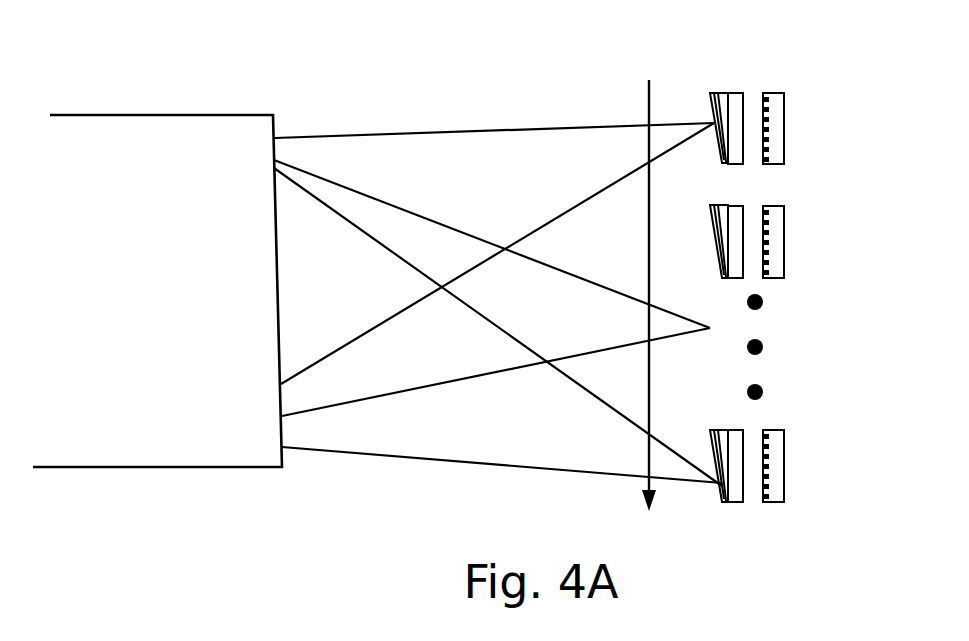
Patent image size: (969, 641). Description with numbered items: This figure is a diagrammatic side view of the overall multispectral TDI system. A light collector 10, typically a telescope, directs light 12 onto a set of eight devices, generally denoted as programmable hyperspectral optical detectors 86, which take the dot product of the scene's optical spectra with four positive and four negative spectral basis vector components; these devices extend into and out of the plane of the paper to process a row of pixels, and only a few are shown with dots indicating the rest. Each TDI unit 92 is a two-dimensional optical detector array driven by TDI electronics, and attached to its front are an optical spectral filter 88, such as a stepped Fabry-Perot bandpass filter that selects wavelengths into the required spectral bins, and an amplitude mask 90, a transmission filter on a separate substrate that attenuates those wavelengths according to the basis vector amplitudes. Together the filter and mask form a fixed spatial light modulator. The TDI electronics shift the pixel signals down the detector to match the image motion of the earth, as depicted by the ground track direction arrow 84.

The light collector 10 is at (157, 291).
The light 12 is at (432, 121).
The ground track direction arrow 84 is at (640, 90).
The programmable hyperspectral optical detectors 86 is at (800, 437).
The optical spectral filter 88 is at (715, 92).
The amplitude mask 90 is at (746, 90).
The TDI unit 92 is at (783, 92).